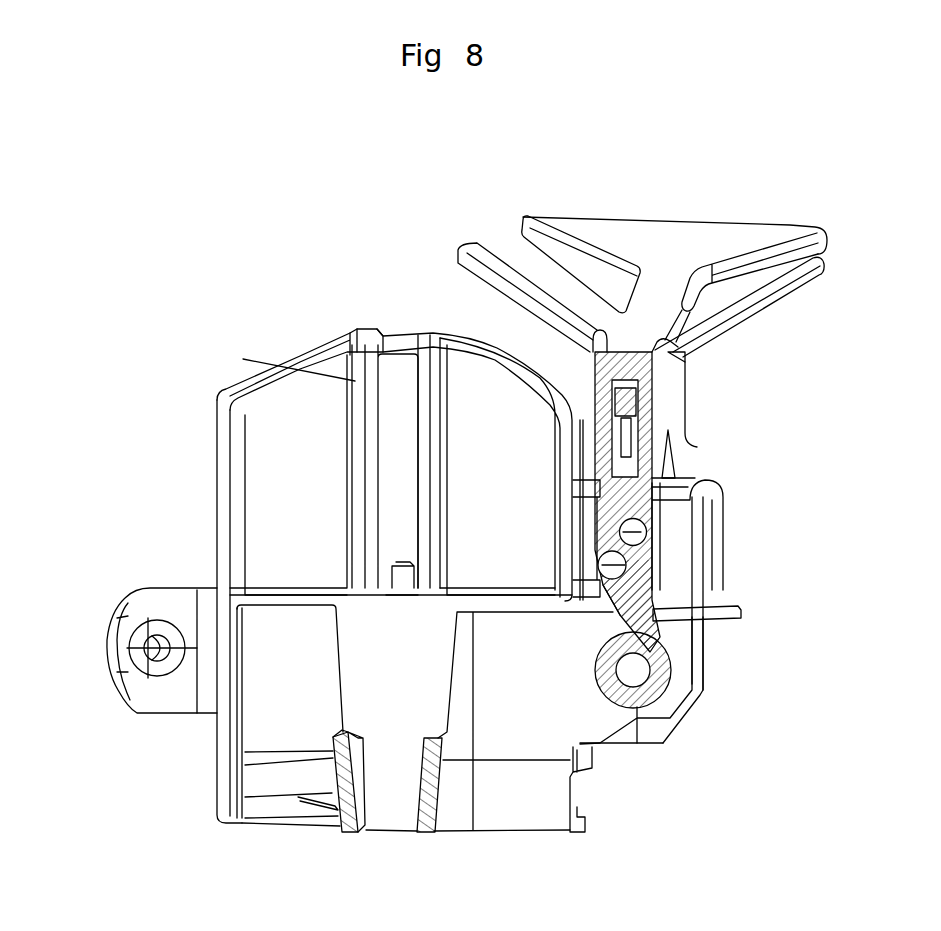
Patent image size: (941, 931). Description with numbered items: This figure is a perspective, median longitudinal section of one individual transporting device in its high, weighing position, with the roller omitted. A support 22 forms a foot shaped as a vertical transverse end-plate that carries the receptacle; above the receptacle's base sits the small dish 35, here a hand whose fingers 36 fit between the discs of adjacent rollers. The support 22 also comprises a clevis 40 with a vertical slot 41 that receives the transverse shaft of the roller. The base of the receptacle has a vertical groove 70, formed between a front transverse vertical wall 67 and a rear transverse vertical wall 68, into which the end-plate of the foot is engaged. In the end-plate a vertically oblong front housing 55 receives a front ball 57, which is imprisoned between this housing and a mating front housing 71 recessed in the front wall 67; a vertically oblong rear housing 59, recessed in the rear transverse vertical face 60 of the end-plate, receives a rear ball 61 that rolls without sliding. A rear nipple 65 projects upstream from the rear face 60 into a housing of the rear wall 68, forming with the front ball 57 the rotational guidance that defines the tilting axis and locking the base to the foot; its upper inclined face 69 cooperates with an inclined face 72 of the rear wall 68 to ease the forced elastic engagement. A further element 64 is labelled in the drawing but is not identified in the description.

The support 22 is at (277, 705).
The small dish 35 is at (672, 252).
The fingers 36 is at (491, 255).
The clevis 40 is at (293, 360).
The vertical slot 41 is at (397, 425).
The front housing 55 is at (627, 562).
The front ball 57 is at (605, 578).
The rear housing 59 is at (625, 525).
The rear transverse vertical face 60 is at (615, 517).
The rear ball 61 is at (641, 530).
The lower hatched arm 64 is at (623, 625).
The rear nipple 65 is at (655, 592).
The front transverse vertical wall 67 is at (628, 512).
The rear transverse vertical wall 68 is at (663, 490).
The upper inclined face 69 is at (614, 567).
The vertical groove 70 is at (613, 390).
The front housing 71 is at (603, 545).
The inclined face 72 is at (690, 617).